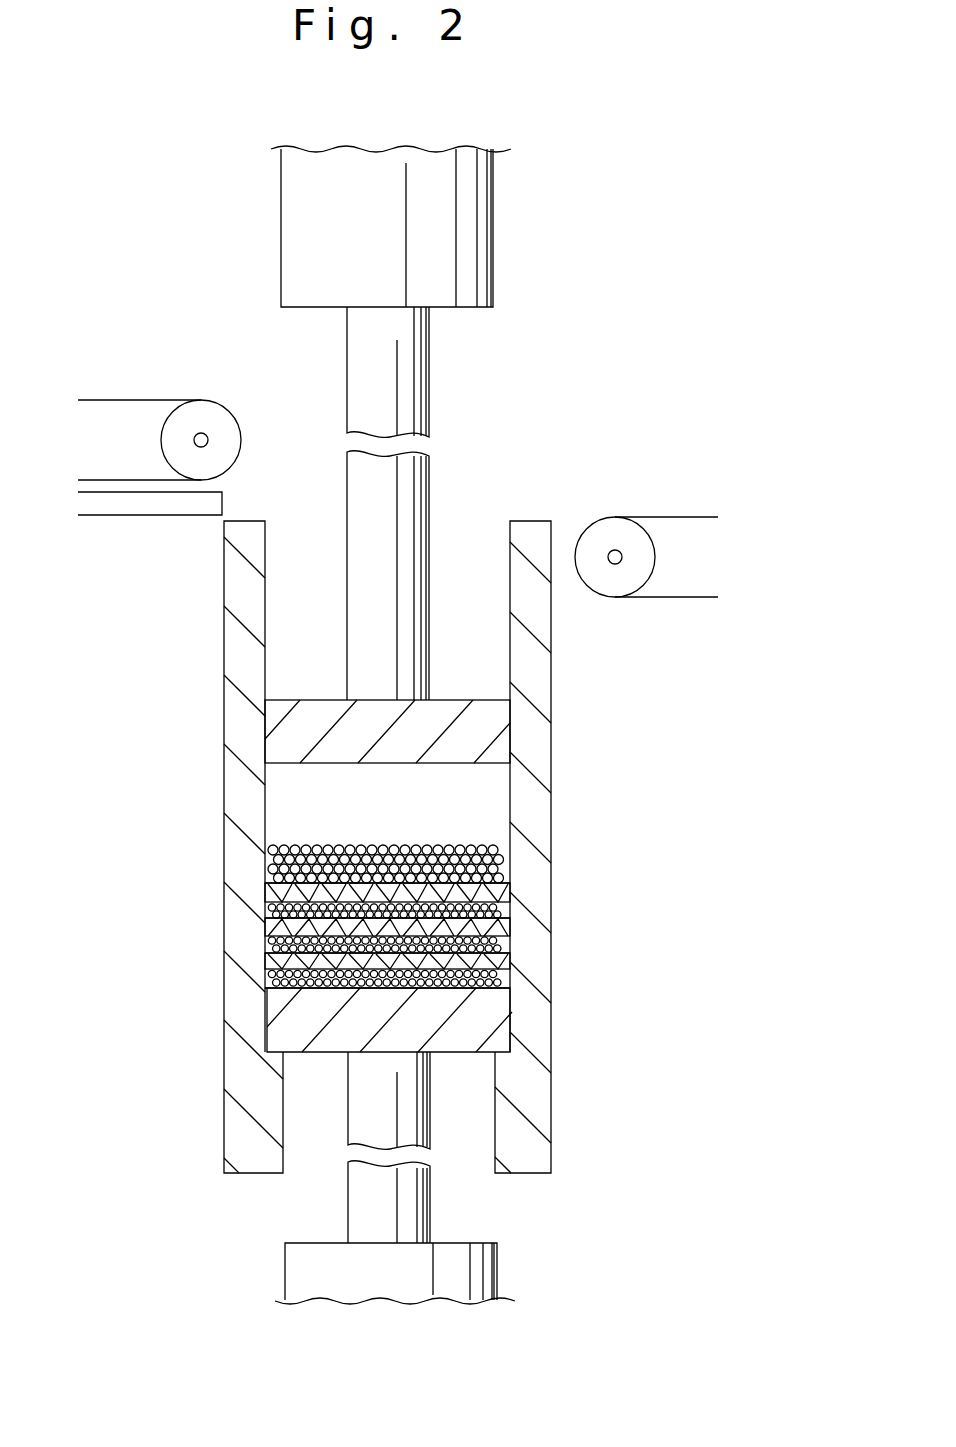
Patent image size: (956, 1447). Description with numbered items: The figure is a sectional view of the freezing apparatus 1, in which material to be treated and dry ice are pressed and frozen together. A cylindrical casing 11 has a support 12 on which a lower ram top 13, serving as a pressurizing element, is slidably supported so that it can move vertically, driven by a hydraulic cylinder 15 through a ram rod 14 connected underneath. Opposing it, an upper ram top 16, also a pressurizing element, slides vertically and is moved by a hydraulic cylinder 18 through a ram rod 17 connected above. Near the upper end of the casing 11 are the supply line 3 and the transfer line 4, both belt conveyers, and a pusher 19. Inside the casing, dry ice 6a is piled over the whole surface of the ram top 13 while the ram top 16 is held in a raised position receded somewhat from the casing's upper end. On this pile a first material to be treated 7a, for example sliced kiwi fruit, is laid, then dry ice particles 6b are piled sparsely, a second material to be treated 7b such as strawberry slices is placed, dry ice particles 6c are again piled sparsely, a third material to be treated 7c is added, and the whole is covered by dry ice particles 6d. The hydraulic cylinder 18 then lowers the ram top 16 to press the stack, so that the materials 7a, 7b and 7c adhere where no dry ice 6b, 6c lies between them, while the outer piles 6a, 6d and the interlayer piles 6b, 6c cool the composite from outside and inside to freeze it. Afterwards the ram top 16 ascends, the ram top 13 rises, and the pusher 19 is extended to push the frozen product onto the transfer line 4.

The freezing apparatus 1 is at (674, 228).
The supply line 3 is at (125, 398).
The transfer line 4 is at (665, 517).
The dry ice 6a is at (272, 978).
The dry ice particles 6b is at (275, 942).
The dry ice particles 6c is at (270, 908).
The dry ice particles 6d is at (275, 857).
The material to be treated 7a is at (505, 960).
The material to be treated 7b is at (500, 925).
The material to be treated 7c is at (497, 893).
The casing 11 is at (552, 805).
The support 12 is at (503, 1060).
The ram top 13 is at (273, 1013).
The ram rod 14 is at (410, 1209).
The hydraulic cylinder 15 is at (295, 1272).
The ram top 16 is at (287, 728).
The ram rod 17 is at (408, 390).
The hydraulic cylinder 18 is at (463, 257).
The pusher 19 is at (117, 515).